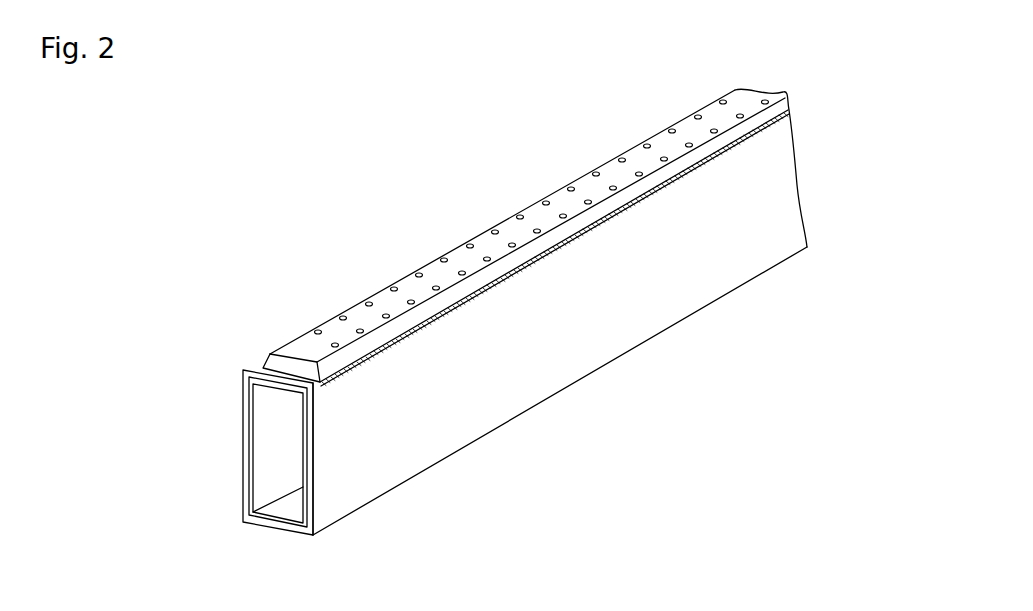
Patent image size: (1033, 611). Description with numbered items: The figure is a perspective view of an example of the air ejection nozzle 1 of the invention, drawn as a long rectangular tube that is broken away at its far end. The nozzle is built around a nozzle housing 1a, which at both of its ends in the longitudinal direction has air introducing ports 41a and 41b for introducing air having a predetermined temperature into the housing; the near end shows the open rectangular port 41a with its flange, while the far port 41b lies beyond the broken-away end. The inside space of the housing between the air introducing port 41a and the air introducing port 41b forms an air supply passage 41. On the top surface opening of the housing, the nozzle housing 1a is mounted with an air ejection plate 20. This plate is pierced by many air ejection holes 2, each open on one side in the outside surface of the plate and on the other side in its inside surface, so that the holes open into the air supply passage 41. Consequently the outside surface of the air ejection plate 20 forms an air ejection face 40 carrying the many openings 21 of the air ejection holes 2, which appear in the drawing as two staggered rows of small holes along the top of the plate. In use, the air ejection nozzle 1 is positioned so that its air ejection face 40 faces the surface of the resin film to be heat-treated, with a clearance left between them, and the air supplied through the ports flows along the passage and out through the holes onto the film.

The air ejection nozzle 1 is at (462, 205).
The nozzle housing 1a is at (473, 393).
The air ejection holes 2 is at (367, 300).
The air ejection plate 20 is at (593, 208).
The openings 21 is at (393, 287).
The air ejection face 40 is at (593, 183).
The air supply passage 41 is at (290, 419).
The air introducing port 41a is at (263, 472).
The air introducing port 41b is at (792, 157).